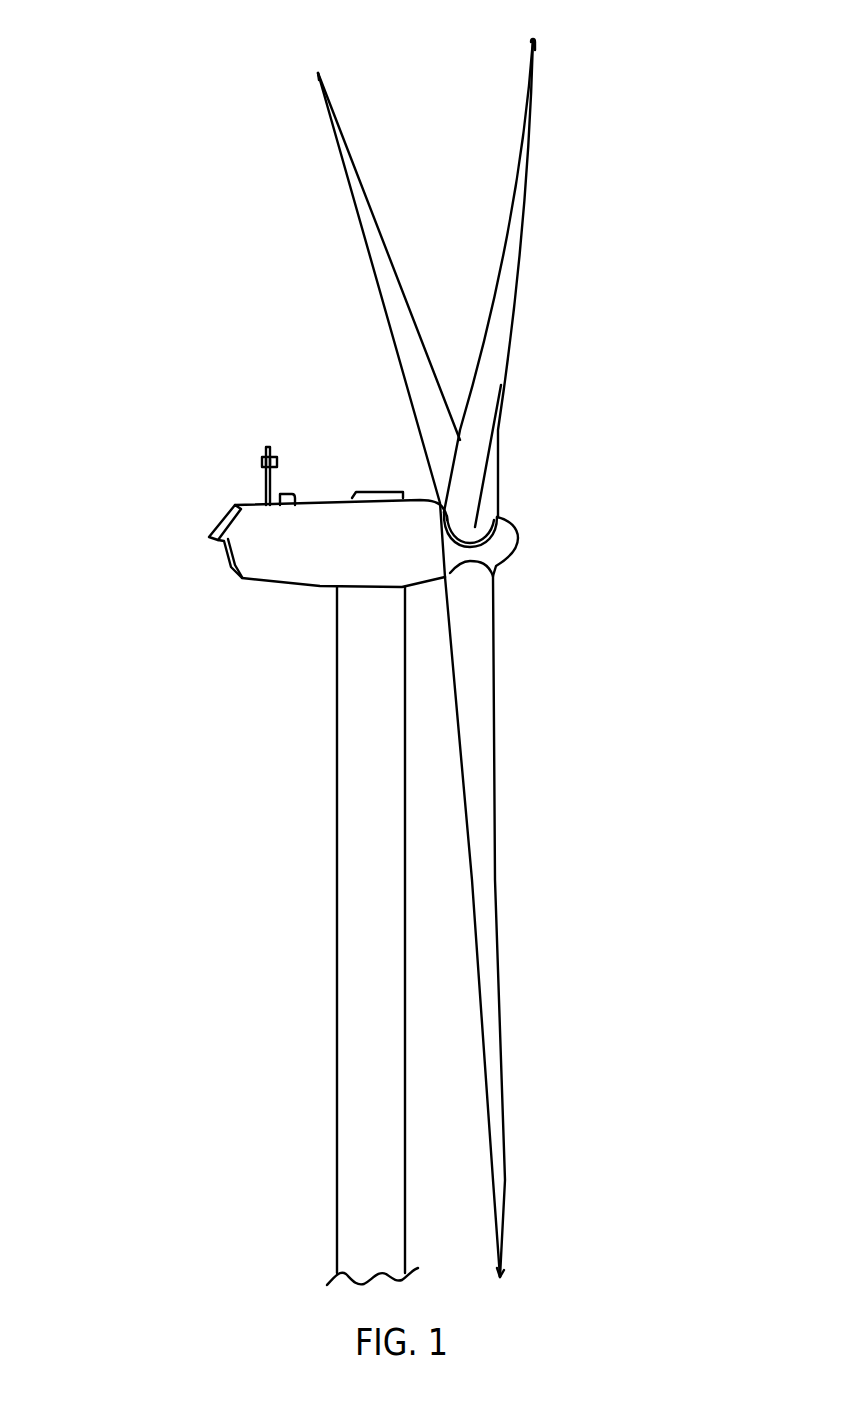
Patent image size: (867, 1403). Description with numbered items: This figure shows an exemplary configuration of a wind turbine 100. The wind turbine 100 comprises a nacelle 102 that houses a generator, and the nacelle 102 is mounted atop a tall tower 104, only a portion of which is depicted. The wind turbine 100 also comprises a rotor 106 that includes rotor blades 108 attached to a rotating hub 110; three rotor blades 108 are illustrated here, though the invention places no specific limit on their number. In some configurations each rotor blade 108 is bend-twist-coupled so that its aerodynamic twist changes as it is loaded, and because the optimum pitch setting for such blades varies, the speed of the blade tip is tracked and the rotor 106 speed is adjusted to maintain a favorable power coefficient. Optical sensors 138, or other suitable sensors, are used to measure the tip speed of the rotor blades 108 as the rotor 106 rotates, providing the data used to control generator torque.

The wind turbine 100 is at (172, 294).
The nacelle 102 is at (287, 583).
The tower 104 is at (337, 875).
The rotor 106 is at (622, 221).
The rotor blade 108 is at (367, 188).
The rotating hub 110 is at (515, 548).
The optical sensor 138 is at (318, 72).